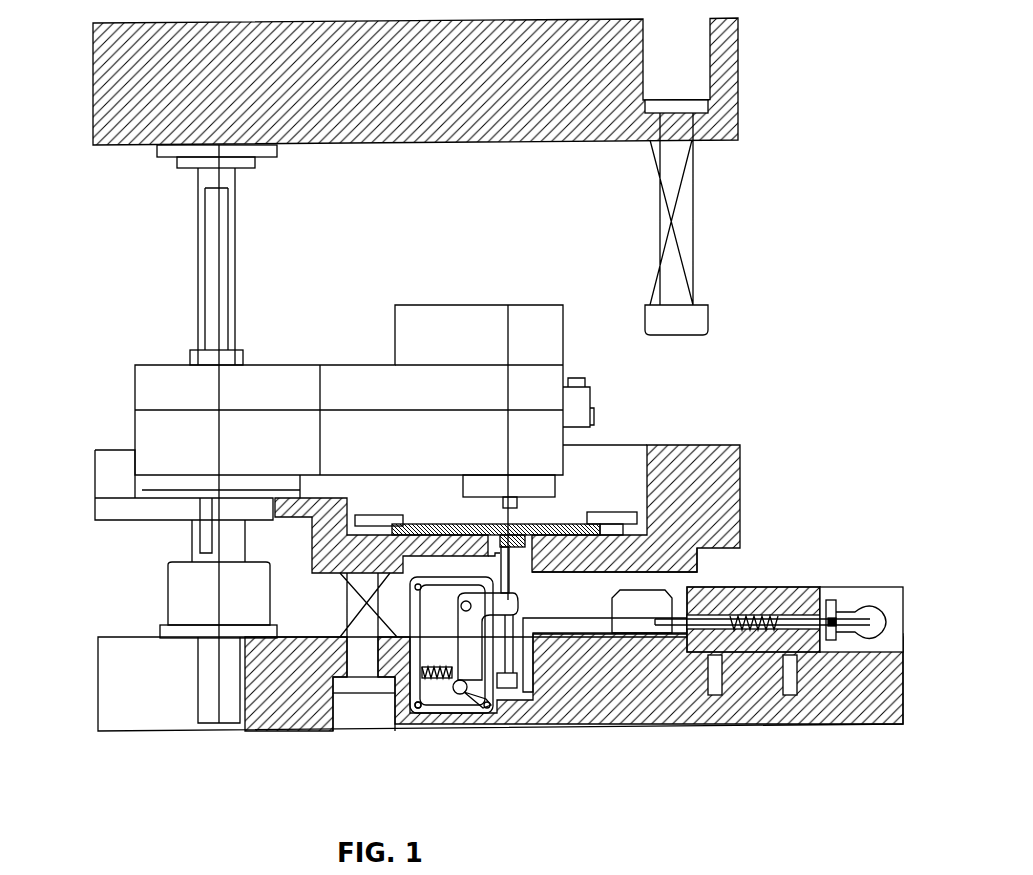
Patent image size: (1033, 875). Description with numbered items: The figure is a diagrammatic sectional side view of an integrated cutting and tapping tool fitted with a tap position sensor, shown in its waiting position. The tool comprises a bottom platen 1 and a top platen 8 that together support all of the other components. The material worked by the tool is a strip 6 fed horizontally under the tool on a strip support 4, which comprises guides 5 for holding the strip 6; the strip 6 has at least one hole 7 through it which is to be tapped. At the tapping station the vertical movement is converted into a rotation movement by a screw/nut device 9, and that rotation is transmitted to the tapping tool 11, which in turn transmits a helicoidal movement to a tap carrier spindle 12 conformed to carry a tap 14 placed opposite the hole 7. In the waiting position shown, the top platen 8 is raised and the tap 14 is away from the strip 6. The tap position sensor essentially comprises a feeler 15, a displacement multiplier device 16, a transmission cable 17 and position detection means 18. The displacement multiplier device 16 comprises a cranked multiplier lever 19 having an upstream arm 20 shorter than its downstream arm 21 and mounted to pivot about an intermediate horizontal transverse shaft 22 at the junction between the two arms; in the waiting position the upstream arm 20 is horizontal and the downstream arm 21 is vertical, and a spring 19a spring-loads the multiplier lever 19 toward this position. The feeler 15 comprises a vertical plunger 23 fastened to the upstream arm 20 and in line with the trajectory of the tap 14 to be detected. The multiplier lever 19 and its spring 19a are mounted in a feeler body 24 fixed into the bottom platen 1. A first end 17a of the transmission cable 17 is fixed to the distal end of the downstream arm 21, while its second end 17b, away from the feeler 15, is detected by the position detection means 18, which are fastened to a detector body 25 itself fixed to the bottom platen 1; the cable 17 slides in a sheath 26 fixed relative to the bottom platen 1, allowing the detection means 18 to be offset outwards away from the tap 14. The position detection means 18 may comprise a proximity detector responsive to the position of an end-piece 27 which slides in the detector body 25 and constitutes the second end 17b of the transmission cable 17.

The bottom platen 1 is at (300, 688).
The strip support 4 is at (740, 445).
The guides 5 is at (368, 520).
The strip 6 is at (427, 527).
The hole 7 is at (503, 533).
The top platen 8 is at (730, 75).
The screw/nut device 9 is at (207, 325).
The tapping tool 11 is at (333, 390).
The tap carrier spindle 12 is at (477, 478).
The tap 14 is at (530, 497).
The feeler 15 is at (490, 562).
The displacement multiplier device 16 is at (442, 637).
The transmission cable 17 is at (740, 645).
The first end 17a is at (507, 688).
The second end 17b is at (830, 645).
The position detection means 18 is at (855, 600).
The multiplier lever 19 is at (472, 652).
The spring 19a is at (444, 678).
The upstream arm 20 is at (525, 617).
The downstream arm 21 is at (480, 684).
The intermediate horizontal transverse shaft 22 is at (461, 608).
The vertical plunger 23 is at (525, 565).
The feeler body 24 is at (422, 709).
The detector body 25 is at (717, 630).
The sheath 26 is at (593, 637).
The end-piece 27 is at (790, 628).